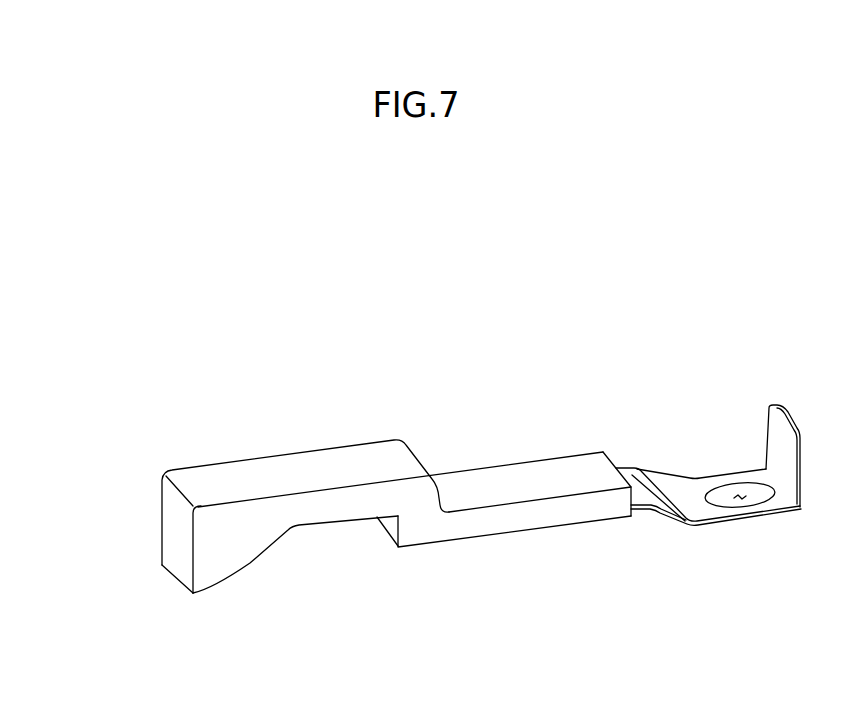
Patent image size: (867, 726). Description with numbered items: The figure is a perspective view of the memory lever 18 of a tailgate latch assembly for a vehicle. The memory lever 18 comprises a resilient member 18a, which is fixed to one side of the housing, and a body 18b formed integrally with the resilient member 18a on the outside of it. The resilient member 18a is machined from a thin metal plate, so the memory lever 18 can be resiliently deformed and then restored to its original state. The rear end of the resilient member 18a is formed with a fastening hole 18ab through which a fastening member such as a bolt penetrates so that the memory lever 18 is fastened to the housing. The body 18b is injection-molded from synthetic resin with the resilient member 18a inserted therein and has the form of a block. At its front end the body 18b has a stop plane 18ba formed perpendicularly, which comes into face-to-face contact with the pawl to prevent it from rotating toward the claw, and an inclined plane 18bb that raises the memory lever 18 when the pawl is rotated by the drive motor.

The memory lever 18 is at (532, 313).
The resilient member 18a is at (637, 470).
The fastening hole 18ab is at (740, 497).
The body 18b is at (557, 472).
The stop plane 18ba is at (170, 532).
The inclined plane 18bb is at (250, 565).